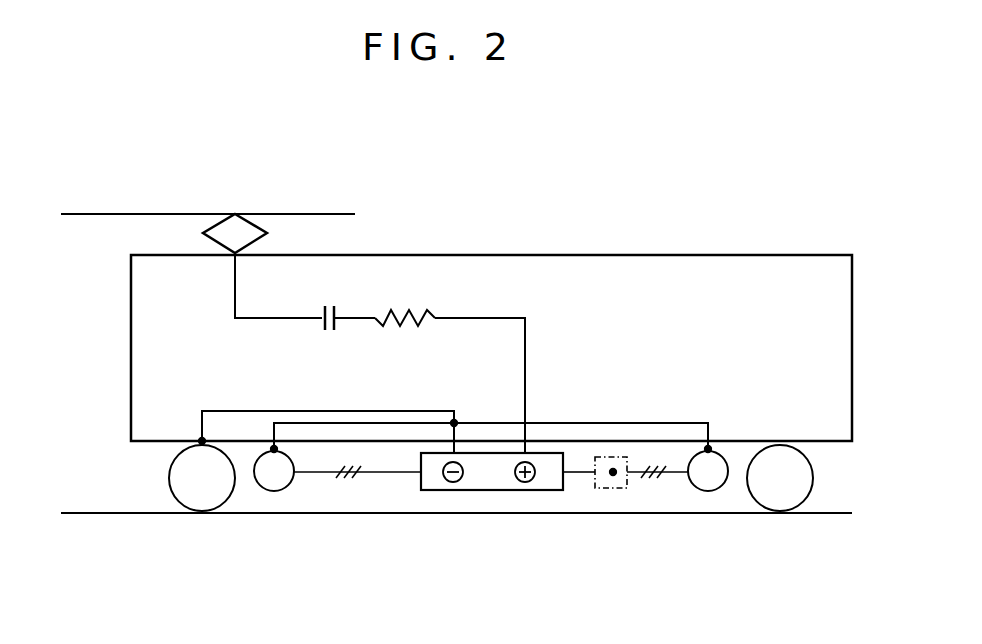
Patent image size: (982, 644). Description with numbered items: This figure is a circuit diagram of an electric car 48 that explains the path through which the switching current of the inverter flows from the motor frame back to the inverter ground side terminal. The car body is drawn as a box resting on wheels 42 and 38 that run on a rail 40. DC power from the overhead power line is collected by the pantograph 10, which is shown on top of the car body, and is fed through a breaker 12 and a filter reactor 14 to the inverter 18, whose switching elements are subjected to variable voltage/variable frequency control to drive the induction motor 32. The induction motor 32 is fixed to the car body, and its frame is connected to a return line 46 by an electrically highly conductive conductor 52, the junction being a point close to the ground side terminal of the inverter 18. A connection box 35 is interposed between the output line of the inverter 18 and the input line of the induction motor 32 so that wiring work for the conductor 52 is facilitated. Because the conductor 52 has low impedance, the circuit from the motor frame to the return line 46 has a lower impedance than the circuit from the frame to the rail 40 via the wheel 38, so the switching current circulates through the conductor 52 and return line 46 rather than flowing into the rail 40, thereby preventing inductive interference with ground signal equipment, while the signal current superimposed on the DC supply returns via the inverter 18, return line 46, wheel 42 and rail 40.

The pantograph 10 is at (267, 233).
The breaker 12 is at (327, 306).
The filter reactor 14 is at (409, 312).
The inverter 18 is at (487, 492).
The induction motor 32 is at (708, 492).
The connection box 35 is at (600, 490).
The wheel 38 is at (813, 478).
The rail 40 is at (262, 514).
The wheel 42 is at (168, 480).
The return line 46 is at (298, 411).
The electric car 48 is at (560, 226).
The conductor 52 is at (622, 423).